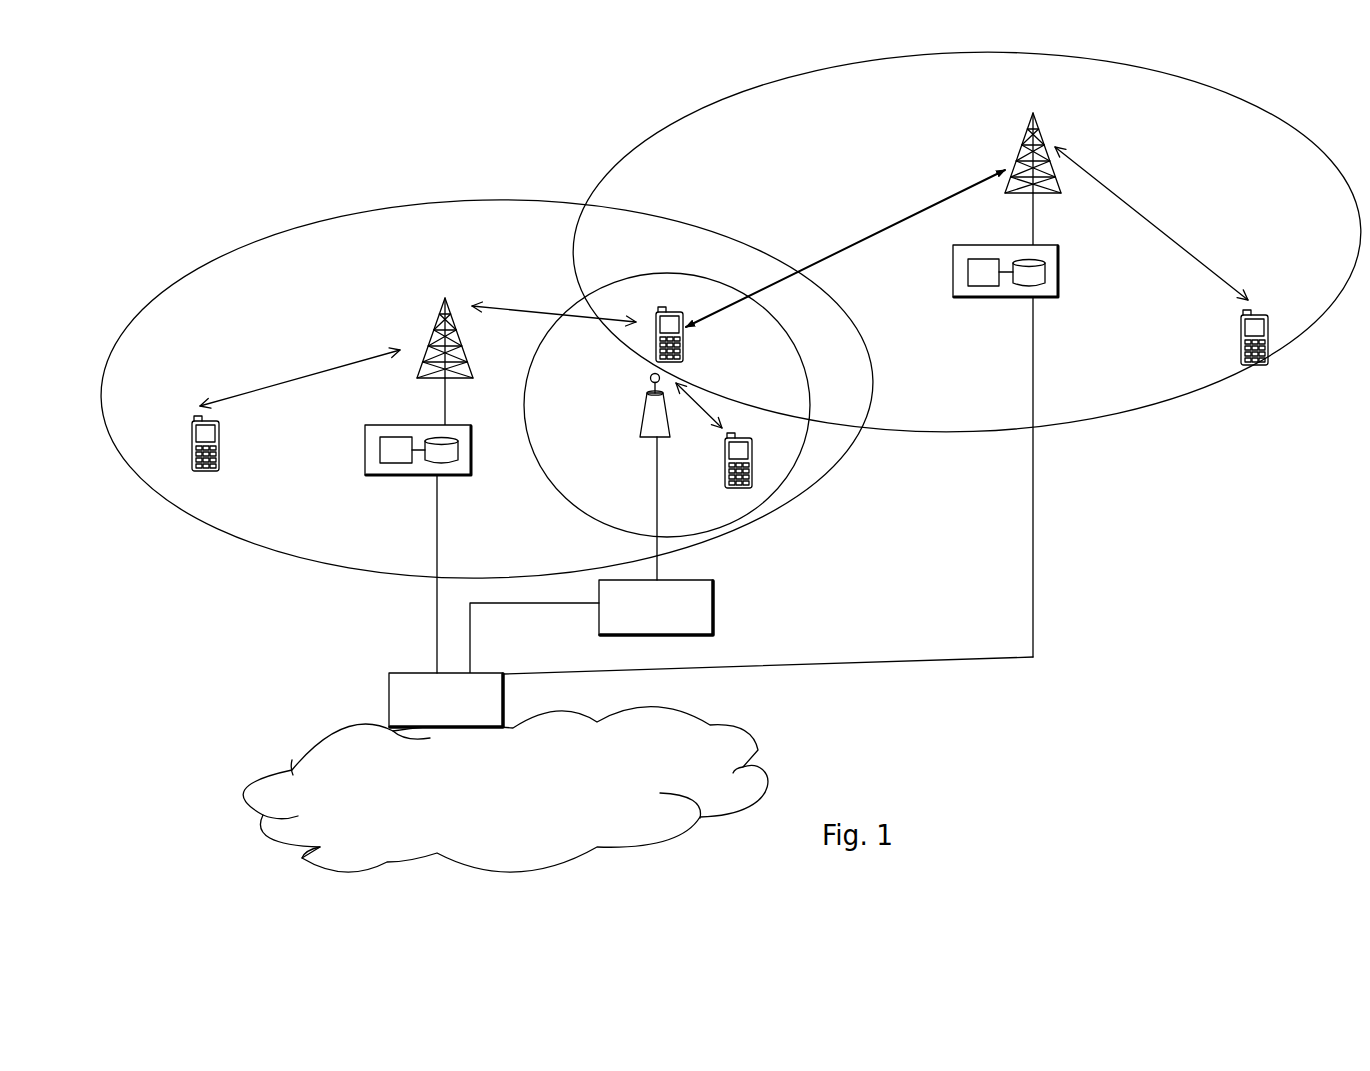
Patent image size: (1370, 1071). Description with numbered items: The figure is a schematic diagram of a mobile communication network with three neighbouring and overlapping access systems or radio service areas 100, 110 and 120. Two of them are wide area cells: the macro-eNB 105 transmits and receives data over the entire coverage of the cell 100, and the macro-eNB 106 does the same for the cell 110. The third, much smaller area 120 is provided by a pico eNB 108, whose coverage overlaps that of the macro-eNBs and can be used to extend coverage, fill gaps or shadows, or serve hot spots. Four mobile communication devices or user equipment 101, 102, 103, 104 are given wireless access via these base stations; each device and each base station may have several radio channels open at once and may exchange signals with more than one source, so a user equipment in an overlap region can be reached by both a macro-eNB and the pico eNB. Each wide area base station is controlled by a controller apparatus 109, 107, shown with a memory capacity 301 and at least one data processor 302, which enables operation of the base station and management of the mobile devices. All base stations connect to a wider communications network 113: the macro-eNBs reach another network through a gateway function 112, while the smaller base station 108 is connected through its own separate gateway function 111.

The radio service area 100 is at (178, 232).
The radio service area 110 is at (645, 128).
The radio service area 120 is at (809, 353).
The user equipment 101 is at (194, 466).
The user equipment 102 is at (1243, 358).
The user equipment 103 is at (755, 487).
The user equipment 104 is at (652, 307).
The macro-eNB 105 is at (428, 345).
The macro-eNB 106 is at (1012, 170).
The controller apparatus 107 is at (952, 246).
The pico eNB 108 is at (637, 432).
The controller apparatus 109 is at (376, 533).
The separate gateway function 111 is at (714, 606).
The gateway function 112 is at (386, 692).
The wider communications network 113 is at (320, 757).
The memory capacity 301 is at (396, 450).
The data processor 302 is at (441, 451).